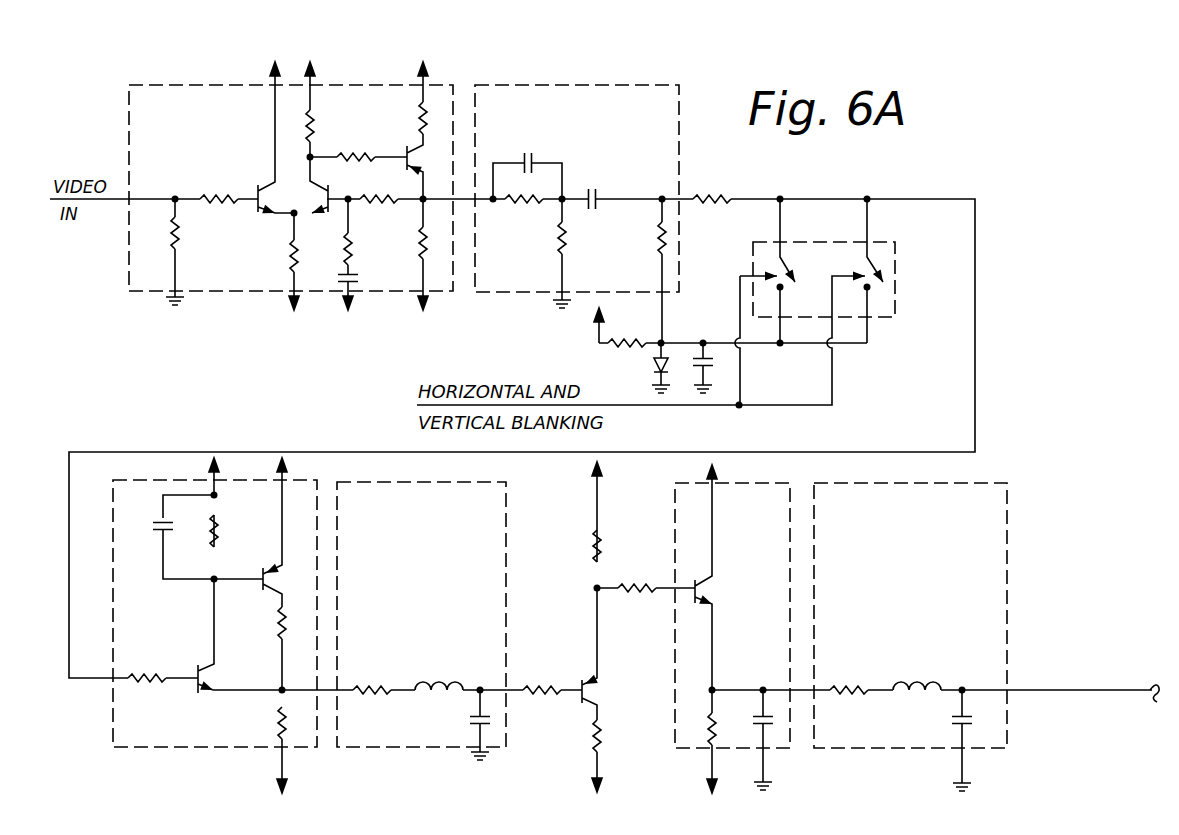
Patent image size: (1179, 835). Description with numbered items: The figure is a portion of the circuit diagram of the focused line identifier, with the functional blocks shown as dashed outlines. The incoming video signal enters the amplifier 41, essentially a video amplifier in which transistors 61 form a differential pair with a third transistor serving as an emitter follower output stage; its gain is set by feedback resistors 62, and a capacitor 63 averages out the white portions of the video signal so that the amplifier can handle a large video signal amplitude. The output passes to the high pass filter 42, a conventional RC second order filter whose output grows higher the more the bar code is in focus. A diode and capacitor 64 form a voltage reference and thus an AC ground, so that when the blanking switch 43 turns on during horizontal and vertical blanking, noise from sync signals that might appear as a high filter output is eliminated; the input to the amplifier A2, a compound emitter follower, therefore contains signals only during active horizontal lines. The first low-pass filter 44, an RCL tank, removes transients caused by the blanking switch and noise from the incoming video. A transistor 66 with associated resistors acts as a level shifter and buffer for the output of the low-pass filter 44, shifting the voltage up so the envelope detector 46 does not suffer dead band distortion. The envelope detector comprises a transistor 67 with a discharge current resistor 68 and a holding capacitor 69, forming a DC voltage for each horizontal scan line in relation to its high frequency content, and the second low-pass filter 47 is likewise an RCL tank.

The amplifier 41 is at (196, 85).
The high pass filter 42 is at (556, 85).
The blanking switch 43 is at (753, 250).
The low-pass filter 44 is at (408, 747).
The envelope detector 46 is at (683, 748).
The low-pass filter 47 is at (878, 748).
The transistors 61 is at (258, 188).
The feedback resistors 62 is at (352, 247).
The capacitor 63 is at (358, 279).
The diode and capacitor 64 is at (670, 362).
The transistor 66 is at (593, 680).
The transistor 67 is at (693, 576).
The discharge current resistor 68 is at (705, 723).
The holding capacitor 69 is at (758, 715).
The amplifier A2 is at (229, 747).